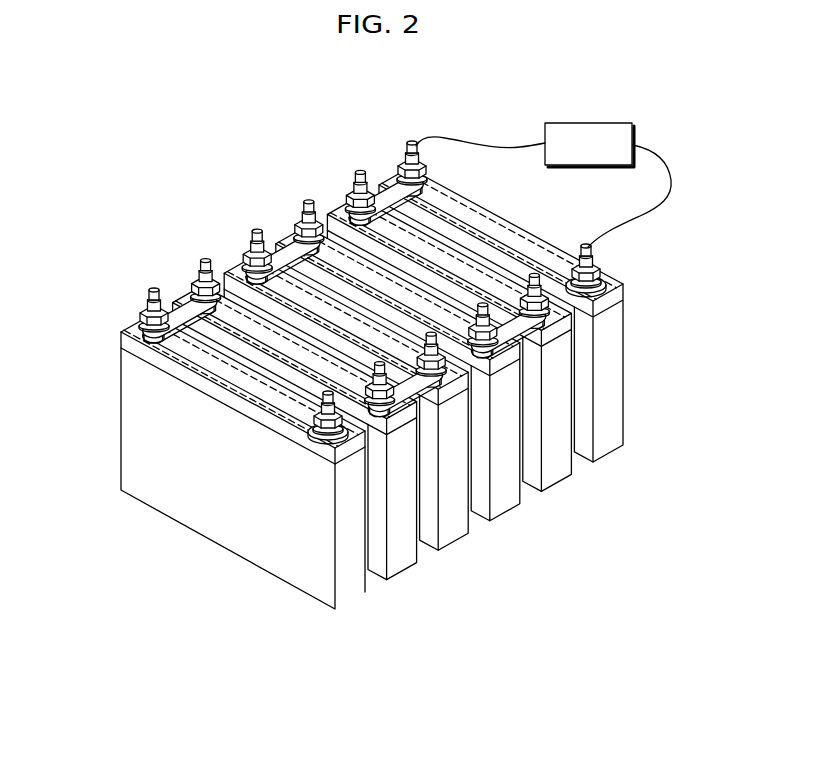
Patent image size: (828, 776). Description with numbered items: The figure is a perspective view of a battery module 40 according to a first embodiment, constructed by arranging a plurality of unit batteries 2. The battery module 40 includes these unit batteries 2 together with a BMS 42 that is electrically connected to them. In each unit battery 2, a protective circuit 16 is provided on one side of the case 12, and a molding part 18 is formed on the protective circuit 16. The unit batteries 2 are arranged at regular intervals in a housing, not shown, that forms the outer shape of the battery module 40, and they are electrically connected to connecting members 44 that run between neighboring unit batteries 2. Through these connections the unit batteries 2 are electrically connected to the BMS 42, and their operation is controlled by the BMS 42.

The unit battery 2 is at (300, 606).
The case 12 is at (195, 507).
The protective circuit 16 is at (158, 357).
The molding part 18 is at (119, 338).
The battery module 40 is at (225, 197).
The BMS 42 is at (617, 122).
The connecting member 44 is at (393, 176).